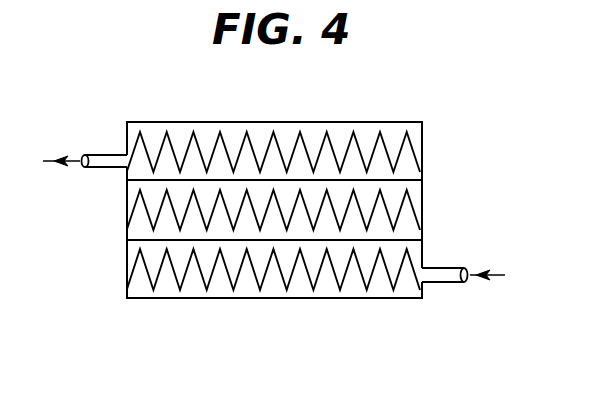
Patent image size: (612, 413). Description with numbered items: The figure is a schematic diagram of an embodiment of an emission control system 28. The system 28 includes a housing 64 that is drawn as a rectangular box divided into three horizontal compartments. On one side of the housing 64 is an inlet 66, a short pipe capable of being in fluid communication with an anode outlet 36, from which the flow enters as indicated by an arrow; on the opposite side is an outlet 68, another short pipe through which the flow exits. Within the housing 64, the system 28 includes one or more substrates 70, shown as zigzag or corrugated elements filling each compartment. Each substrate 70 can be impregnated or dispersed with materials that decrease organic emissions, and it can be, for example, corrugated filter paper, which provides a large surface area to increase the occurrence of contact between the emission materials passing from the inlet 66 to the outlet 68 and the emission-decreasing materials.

The emission control system 28 is at (483, 113).
The housing 64 is at (422, 199).
The substrate 70 is at (309, 138).
The outlet 68 is at (100, 168).
The inlet 66 is at (444, 281).
The anode outlet 36 is at (503, 275).